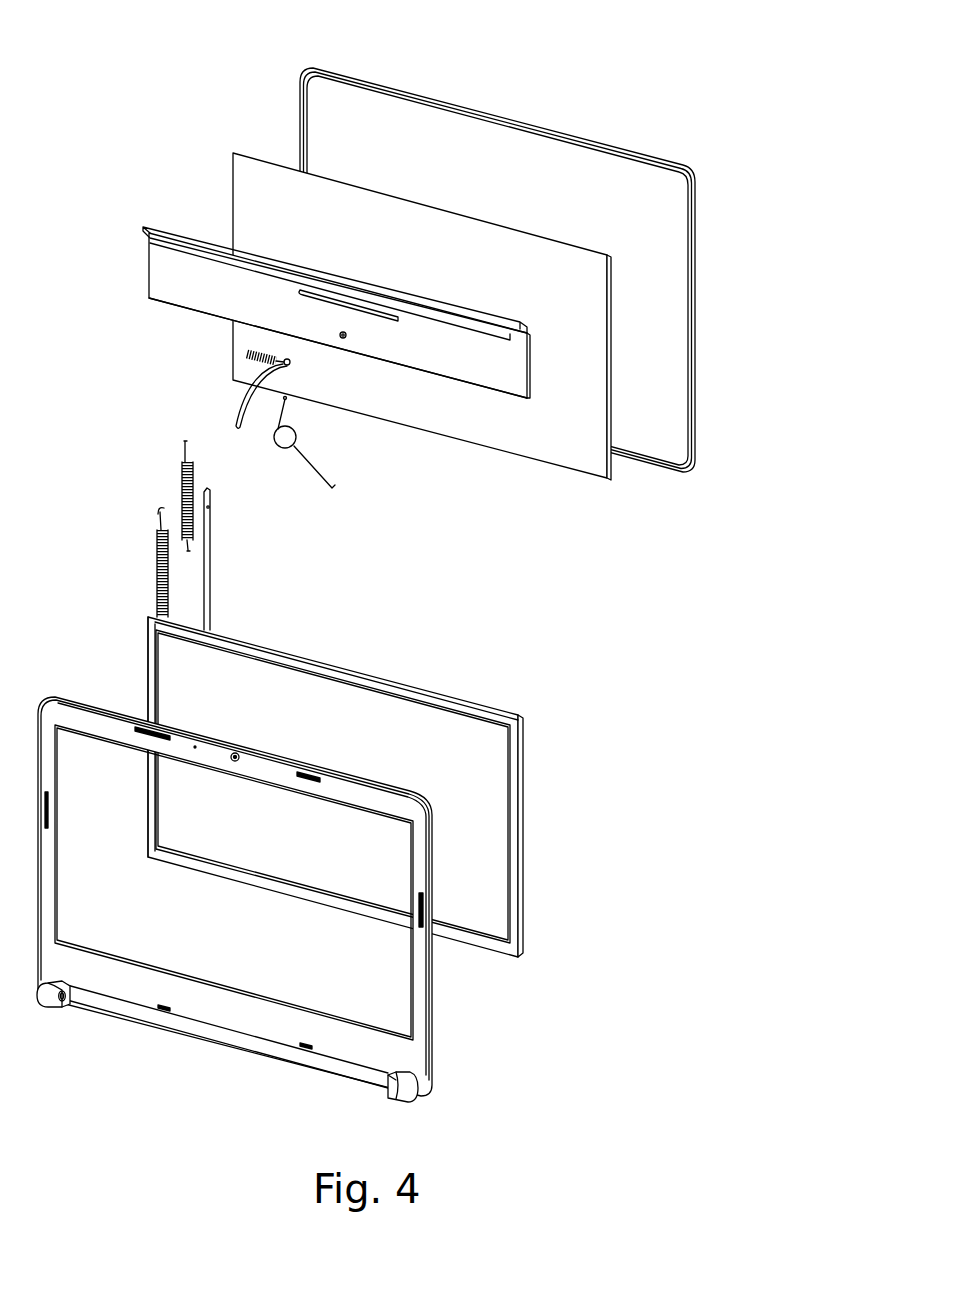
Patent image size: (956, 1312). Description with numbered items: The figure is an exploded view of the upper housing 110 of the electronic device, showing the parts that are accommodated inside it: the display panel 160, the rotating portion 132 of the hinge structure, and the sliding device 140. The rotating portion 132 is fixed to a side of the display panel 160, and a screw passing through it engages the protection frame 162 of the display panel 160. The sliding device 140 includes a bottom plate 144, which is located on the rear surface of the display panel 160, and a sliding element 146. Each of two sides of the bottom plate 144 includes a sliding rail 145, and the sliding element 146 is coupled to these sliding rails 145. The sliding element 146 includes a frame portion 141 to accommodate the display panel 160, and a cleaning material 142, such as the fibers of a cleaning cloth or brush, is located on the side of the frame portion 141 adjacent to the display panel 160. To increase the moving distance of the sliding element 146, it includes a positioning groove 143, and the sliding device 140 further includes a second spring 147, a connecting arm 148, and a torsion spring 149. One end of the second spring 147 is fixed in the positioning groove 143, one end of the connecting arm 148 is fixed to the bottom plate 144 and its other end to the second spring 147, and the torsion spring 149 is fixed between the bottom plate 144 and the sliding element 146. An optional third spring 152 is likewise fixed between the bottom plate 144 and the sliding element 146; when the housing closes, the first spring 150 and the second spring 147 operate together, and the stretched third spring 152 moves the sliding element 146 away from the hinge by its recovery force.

The upper housing 110 is at (363, 82).
The rotating portion 132 is at (212, 535).
The sliding device 140 is at (405, 291).
The frame portion 141 is at (172, 248).
The cleaning material 142 is at (285, 326).
The positioning groove 143 is at (288, 294).
The bottom plate 144 is at (501, 316).
The sliding rail 145 is at (613, 333).
The sliding element 146 is at (488, 372).
The second spring 147 is at (245, 358).
The connecting arm 148 is at (243, 407).
The torsion spring 149 is at (317, 474).
The first spring 150 is at (155, 567).
The third spring 152 is at (180, 480).
The display panel 160 is at (285, 772).
The protection frame 162 is at (155, 670).